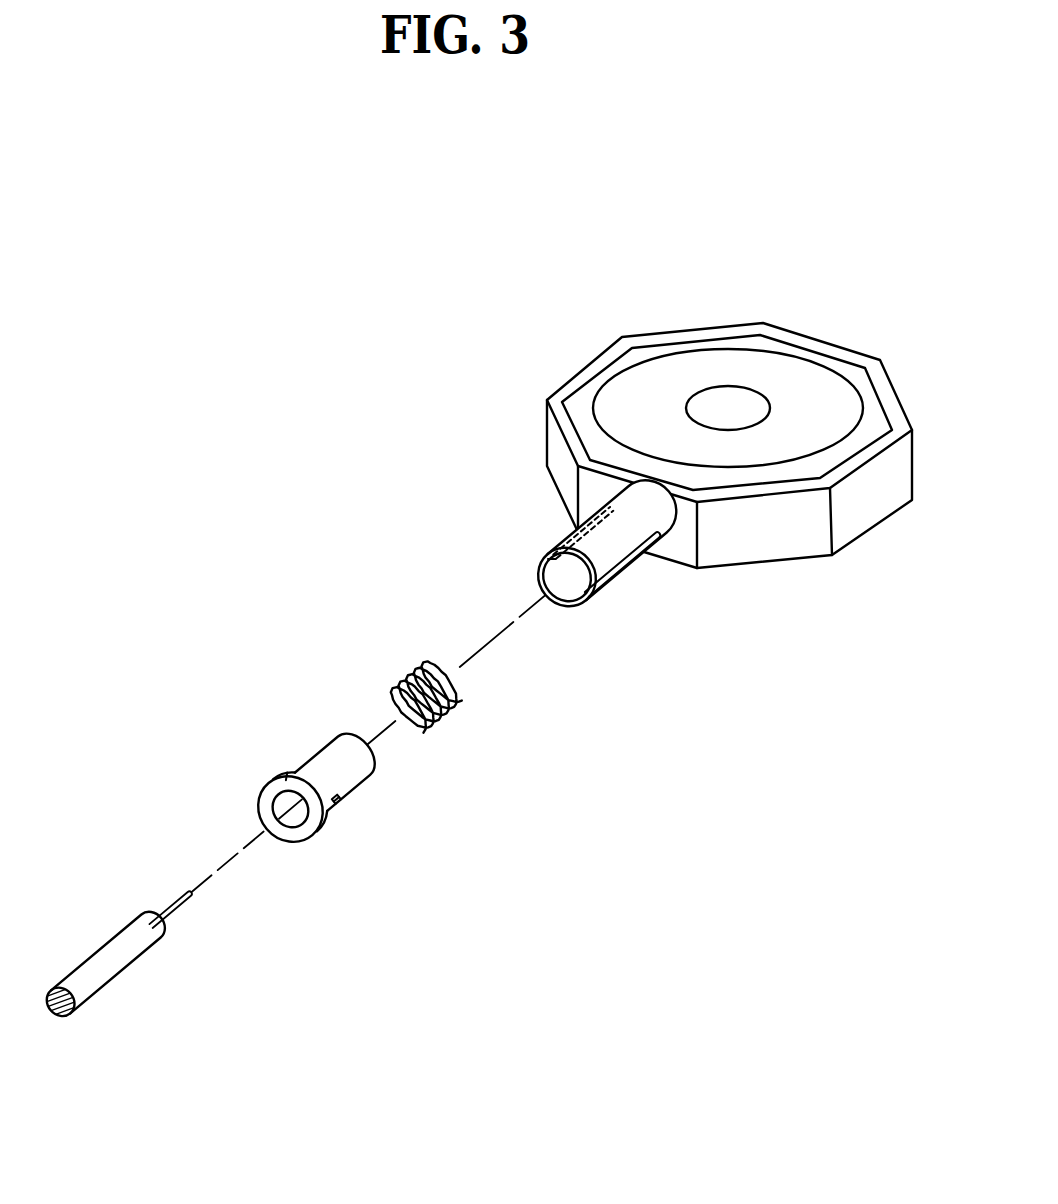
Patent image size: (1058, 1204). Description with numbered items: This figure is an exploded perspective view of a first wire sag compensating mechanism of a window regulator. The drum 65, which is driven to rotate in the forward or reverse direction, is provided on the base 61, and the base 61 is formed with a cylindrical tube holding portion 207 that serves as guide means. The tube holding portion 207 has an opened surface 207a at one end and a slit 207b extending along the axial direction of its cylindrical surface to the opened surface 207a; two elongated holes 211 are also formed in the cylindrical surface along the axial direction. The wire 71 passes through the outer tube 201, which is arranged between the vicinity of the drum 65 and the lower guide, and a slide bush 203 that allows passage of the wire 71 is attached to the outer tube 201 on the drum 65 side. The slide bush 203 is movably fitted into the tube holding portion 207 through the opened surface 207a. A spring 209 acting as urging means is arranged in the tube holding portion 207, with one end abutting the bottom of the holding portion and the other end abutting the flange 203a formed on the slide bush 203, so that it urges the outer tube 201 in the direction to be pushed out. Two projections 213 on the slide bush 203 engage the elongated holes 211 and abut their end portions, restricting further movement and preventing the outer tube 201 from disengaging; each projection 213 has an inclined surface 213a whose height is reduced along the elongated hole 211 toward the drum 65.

The base 61 is at (873, 470).
The drum 65 is at (702, 367).
The outer tube 201 is at (117, 960).
The wire 71 is at (182, 905).
The slide bush 203 is at (343, 767).
The flange 203a is at (307, 833).
The projection 213 is at (333, 803).
The inclined surface 213a is at (338, 800).
The spring 209 is at (458, 705).
The tube holding portion 207 is at (652, 517).
The opened surface 207a is at (582, 573).
The slit 207b is at (567, 603).
The elongated hole 211 is at (633, 570).